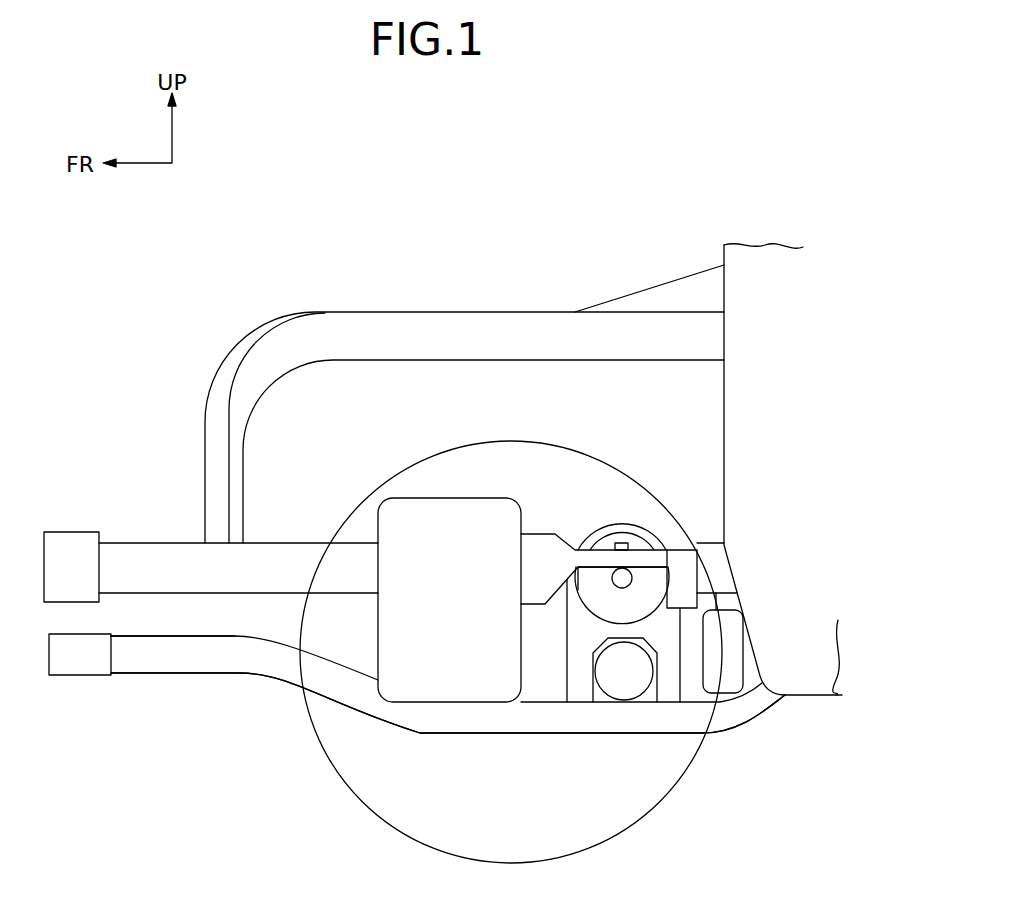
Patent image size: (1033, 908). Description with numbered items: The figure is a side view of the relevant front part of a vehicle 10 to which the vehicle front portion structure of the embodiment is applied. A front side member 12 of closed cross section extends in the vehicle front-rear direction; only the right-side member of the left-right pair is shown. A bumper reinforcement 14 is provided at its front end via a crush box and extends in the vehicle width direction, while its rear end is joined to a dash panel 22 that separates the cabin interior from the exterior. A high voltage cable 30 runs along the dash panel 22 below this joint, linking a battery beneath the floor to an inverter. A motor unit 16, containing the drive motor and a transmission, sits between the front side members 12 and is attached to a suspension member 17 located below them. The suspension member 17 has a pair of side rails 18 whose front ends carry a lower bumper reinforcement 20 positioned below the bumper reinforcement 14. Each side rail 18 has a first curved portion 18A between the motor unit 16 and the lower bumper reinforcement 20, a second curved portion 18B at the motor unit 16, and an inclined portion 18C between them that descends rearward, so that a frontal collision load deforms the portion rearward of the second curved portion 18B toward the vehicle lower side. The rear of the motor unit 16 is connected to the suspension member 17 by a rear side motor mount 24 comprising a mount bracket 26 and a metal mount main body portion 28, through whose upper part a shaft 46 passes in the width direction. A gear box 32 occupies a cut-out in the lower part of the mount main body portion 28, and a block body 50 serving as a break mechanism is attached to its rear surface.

The vehicle 10 is at (368, 209).
The front side member 12 is at (165, 543).
The bumper reinforcement 14 is at (72, 532).
The motor unit 16 is at (437, 498).
The suspension member 17 is at (497, 737).
The side rail 18 is at (178, 673).
The first curved portion 18A is at (240, 673).
The second curved portion 18B is at (422, 733).
The inclined portion 18C is at (345, 713).
The lower bumper reinforcement 20 is at (72, 675).
The dash panel 22 is at (724, 412).
The rear side motor mount 24 is at (579, 493).
The mount bracket 26 is at (540, 533).
The mount main body portion 28 is at (625, 522).
The high voltage cable 30 is at (703, 650).
The gear box 32 is at (650, 695).
The shaft 46 is at (620, 590).
The block body 50 is at (680, 550).